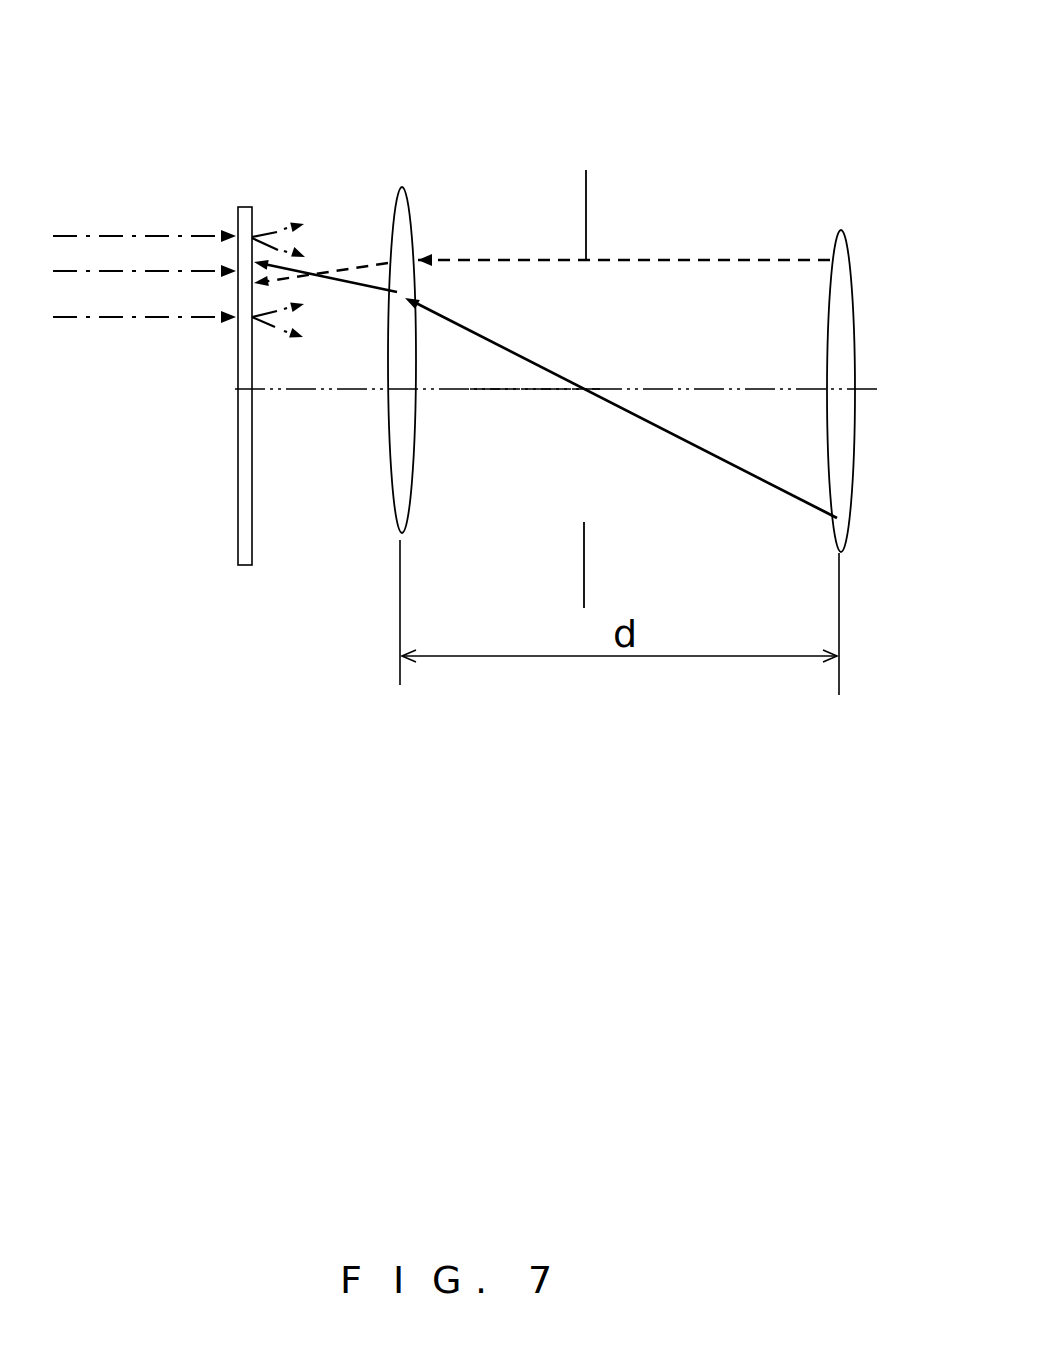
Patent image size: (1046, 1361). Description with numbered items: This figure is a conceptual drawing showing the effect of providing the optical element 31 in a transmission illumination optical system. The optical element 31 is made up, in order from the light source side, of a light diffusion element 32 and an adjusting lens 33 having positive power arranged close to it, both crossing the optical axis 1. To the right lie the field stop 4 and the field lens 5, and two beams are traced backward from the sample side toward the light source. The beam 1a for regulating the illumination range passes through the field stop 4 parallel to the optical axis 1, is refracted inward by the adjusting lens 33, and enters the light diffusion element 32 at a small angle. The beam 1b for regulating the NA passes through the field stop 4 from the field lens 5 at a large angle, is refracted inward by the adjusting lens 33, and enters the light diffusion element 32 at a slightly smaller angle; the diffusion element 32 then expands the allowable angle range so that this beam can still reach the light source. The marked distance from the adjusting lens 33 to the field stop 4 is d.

The optical element 31 is at (250, 80).
The light diffusion element 32 is at (247, 202).
The adjusting lens 33 is at (403, 198).
The field stop 4 is at (583, 207).
The beam for regulating an illumination range 1a is at (712, 259).
The beam for regulating the NA 1b is at (658, 428).
The optical axis 1 is at (486, 390).
The field lens 5 is at (845, 290).